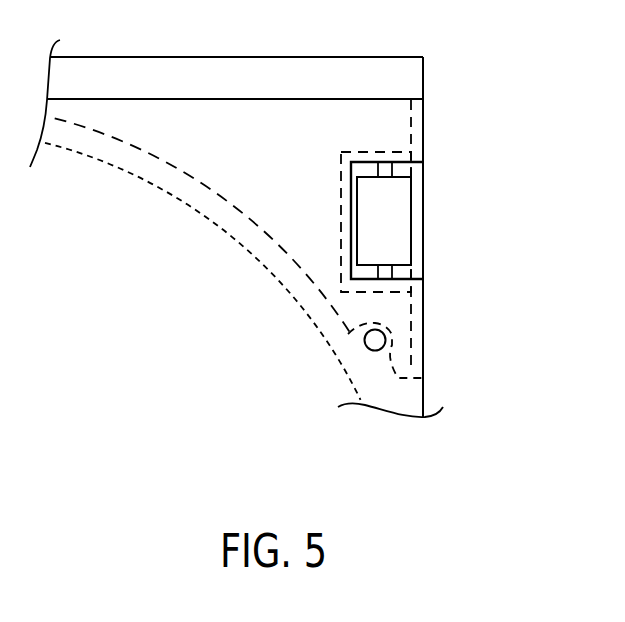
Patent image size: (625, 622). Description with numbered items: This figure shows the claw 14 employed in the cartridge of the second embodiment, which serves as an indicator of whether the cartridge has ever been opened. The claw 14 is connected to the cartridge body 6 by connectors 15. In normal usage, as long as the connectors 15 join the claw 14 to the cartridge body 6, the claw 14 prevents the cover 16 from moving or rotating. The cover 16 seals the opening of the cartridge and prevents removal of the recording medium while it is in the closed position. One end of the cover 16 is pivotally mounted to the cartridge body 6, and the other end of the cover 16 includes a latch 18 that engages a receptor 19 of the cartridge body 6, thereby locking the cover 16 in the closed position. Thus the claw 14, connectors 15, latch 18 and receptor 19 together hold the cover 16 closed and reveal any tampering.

The cartridge body 6 is at (420, 378).
The claw 14 is at (397, 232).
The connectors 15 is at (387, 172).
The cover 16 is at (289, 72).
The latch 18 is at (392, 338).
The receptor 19 is at (370, 349).